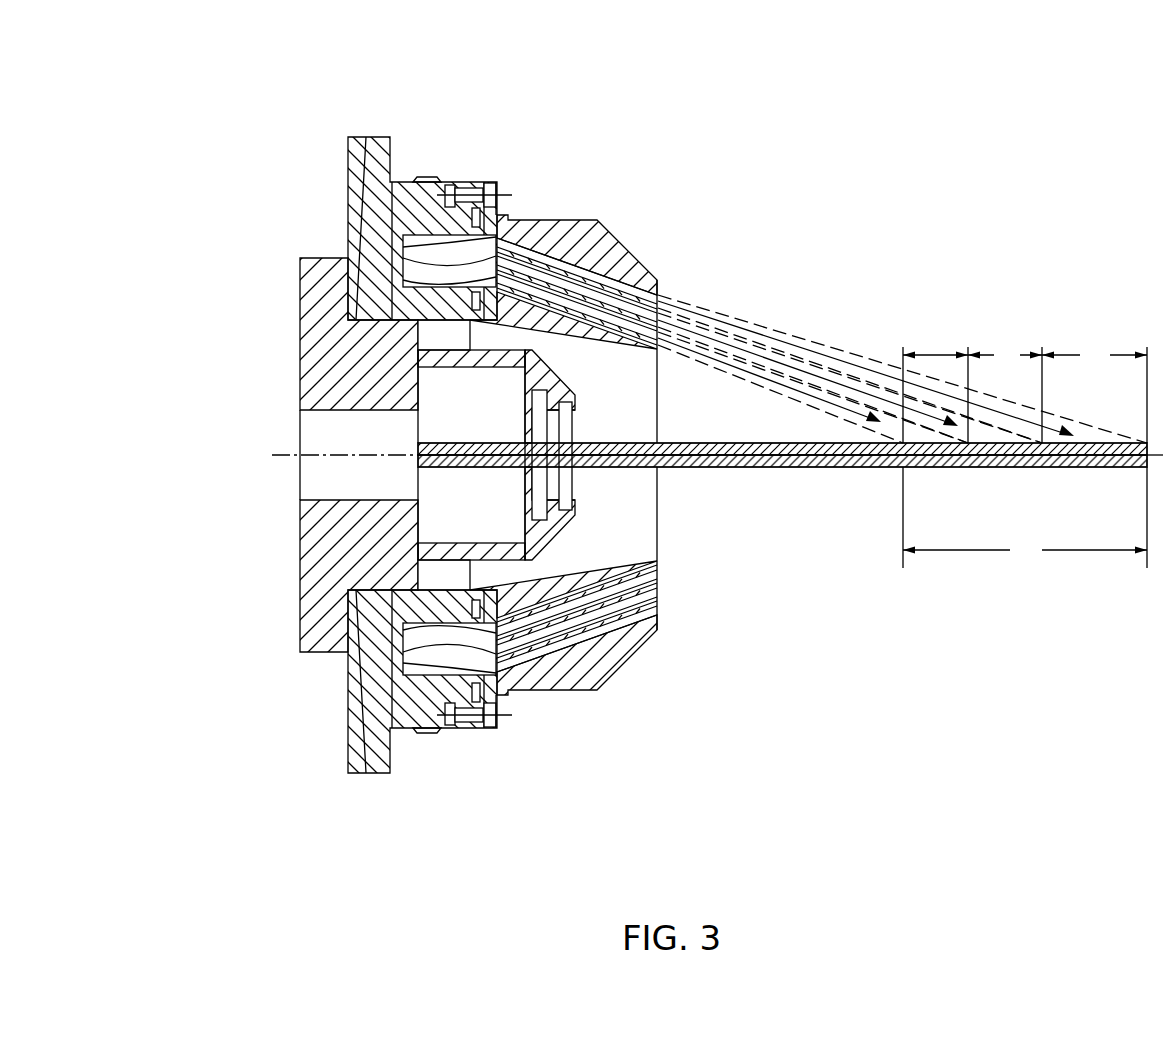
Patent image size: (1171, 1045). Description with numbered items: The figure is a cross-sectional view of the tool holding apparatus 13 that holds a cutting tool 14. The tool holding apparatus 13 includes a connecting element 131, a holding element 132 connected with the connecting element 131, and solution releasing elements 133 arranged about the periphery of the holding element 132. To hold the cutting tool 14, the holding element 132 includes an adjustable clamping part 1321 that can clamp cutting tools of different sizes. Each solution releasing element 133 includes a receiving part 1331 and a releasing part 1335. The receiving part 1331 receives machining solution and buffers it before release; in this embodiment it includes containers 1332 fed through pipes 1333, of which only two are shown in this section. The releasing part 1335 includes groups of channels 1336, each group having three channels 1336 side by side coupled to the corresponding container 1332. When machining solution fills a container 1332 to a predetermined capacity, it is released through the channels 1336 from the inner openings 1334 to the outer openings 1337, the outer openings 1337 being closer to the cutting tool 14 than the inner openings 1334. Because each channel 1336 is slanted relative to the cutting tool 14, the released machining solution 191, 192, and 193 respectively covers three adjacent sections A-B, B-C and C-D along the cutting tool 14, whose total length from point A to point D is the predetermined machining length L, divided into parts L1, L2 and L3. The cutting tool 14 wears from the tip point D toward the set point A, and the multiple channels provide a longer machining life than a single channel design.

The tool holding apparatus 13 is at (198, 92).
The connecting element 131 is at (318, 303).
The holding element 132 is at (525, 392).
The adjustable clamping part 1321 is at (538, 434).
The solution releasing element 133 is at (602, 148).
The receiving part 1331 is at (457, 212).
The container 1332 is at (385, 165).
The pipe 1333 is at (426, 180).
The inner opening 1334 is at (403, 280).
The releasing part 1335 is at (536, 228).
The channel 1336 is at (593, 320).
The outer opening 1337 is at (660, 342).
The cutting tool 14 is at (795, 470).
The released machining solution 191 is at (782, 390).
The released machining solution 192 is at (768, 357).
The released machining solution 193 is at (795, 340).